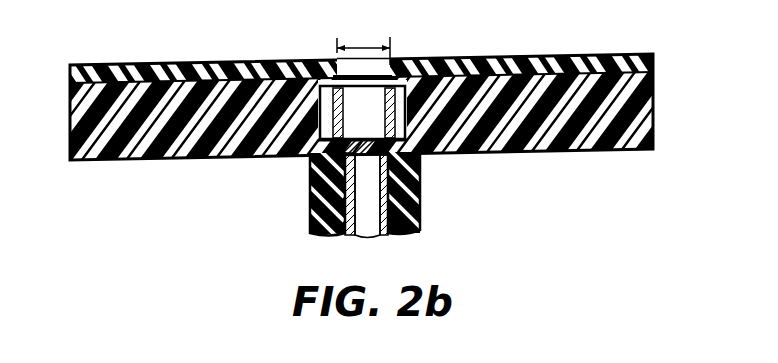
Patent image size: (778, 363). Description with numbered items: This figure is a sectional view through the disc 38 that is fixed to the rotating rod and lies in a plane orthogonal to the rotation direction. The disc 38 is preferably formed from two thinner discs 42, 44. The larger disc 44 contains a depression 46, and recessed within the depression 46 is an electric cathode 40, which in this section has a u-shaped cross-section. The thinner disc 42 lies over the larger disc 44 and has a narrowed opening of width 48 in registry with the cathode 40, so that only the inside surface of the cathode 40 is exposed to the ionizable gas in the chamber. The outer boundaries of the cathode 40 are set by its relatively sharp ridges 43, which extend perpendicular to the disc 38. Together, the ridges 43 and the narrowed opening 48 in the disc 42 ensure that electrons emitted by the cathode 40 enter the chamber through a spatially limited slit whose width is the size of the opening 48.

The disc 38 is at (66, 62).
The electric cathode 40 is at (378, 124).
The thinner disc 42 is at (137, 33).
The ridges 43 is at (326, 93).
The larger disc 44 is at (150, 155).
The depression 46 is at (383, 70).
The opening width 48 is at (376, 27).